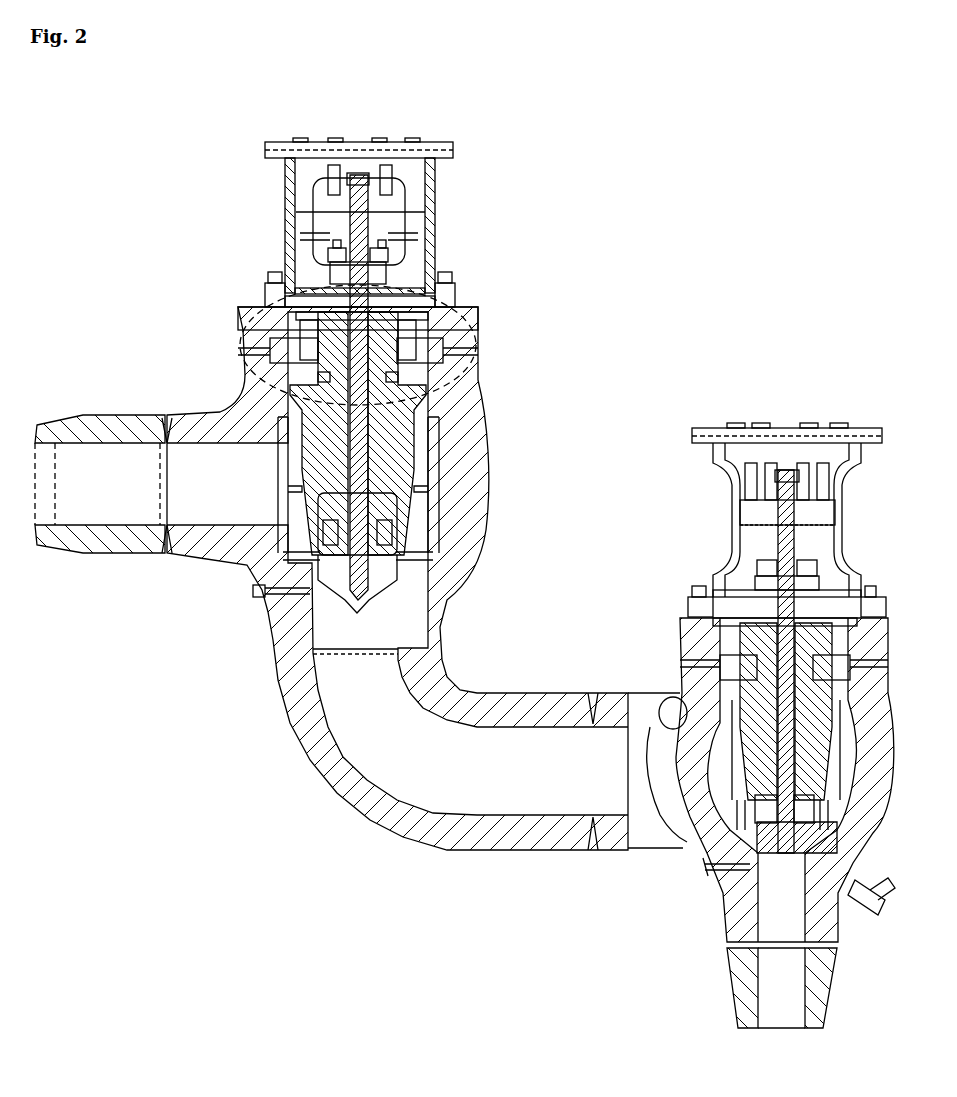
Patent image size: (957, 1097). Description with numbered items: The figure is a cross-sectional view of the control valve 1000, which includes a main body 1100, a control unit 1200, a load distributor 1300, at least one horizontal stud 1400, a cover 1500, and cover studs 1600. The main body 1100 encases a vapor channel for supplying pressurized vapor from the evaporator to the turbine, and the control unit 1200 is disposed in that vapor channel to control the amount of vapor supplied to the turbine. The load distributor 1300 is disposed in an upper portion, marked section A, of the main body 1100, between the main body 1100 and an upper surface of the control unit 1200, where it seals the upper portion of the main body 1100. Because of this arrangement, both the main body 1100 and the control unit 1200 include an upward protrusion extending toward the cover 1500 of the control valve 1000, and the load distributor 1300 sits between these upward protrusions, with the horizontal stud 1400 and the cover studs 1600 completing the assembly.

The control valve 1000 is at (134, 132).
The main body 1100 is at (462, 400).
The control unit 1200 is at (315, 425).
The load distributor 1300 is at (466, 316).
The horizontal stud 1400 is at (245, 328).
The cover 1500 is at (437, 186).
The cover studs 1600 is at (272, 270).
The section A is at (408, 272).